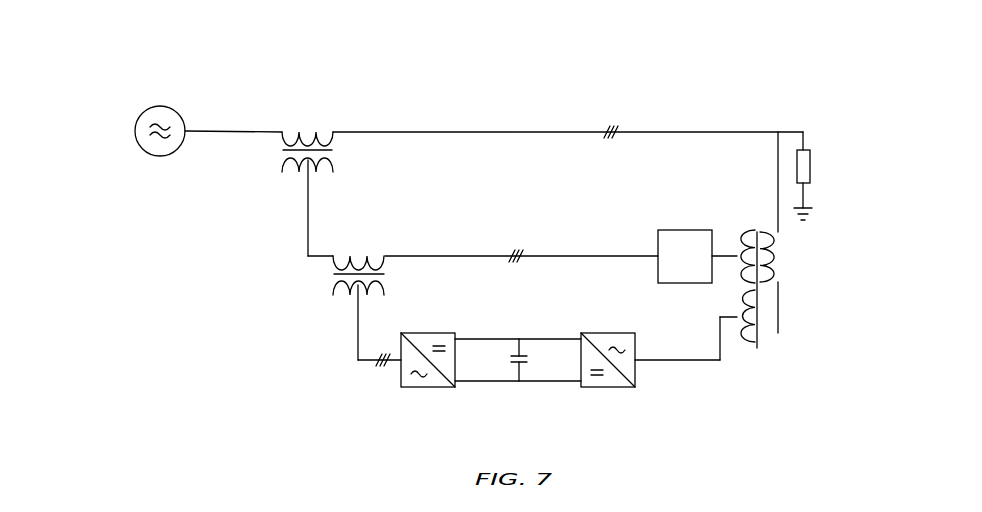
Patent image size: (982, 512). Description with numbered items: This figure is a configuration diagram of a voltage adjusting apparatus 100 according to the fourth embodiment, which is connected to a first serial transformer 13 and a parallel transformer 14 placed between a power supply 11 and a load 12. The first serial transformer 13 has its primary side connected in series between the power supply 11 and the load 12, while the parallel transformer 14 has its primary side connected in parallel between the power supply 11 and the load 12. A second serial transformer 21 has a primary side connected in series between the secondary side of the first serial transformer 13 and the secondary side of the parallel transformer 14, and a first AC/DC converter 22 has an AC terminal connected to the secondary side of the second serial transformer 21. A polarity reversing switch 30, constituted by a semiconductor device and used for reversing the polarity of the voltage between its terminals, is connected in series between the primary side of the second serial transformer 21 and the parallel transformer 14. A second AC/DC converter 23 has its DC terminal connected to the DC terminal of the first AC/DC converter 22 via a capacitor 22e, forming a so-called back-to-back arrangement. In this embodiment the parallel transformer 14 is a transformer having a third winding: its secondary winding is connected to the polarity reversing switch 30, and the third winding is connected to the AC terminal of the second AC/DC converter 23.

The voltage adjusting apparatus 100 is at (529, 50).
The power supply 11 is at (160, 102).
The load 12 is at (815, 165).
The first serial transformer 13 is at (282, 122).
The parallel transformer 14 is at (735, 218).
The second serial transformer 21 is at (358, 248).
The first AC/DC converter 22 is at (390, 373).
The capacitor 22e is at (513, 333).
The second AC/DC converter 23 is at (670, 388).
The polarity reversing switch 30 is at (645, 232).